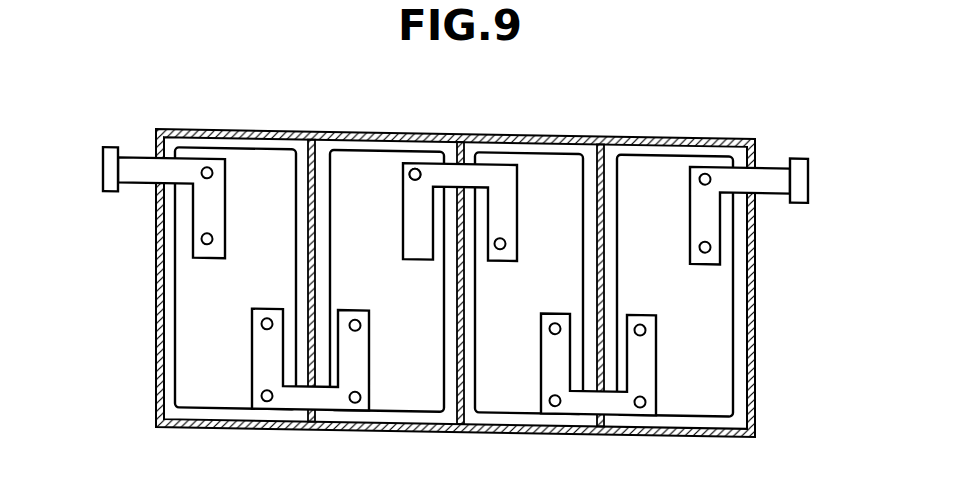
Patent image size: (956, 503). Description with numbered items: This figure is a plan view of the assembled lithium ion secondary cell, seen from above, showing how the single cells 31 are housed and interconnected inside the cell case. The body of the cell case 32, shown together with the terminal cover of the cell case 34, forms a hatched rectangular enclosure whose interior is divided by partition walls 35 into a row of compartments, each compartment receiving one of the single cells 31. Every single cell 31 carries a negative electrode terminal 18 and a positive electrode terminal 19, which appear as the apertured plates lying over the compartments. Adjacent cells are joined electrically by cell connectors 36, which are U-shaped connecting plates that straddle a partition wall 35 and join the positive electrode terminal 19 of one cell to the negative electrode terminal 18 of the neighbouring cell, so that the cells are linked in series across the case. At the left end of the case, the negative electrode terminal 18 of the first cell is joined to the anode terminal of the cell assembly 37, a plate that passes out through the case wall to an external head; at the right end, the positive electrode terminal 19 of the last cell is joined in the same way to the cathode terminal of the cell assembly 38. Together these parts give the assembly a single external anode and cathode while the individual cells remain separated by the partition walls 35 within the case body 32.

The negative electrode terminal 18 is at (207, 167).
The positive electrode terminal 19 is at (416, 169).
The single cell 31 is at (209, 393).
The body of the cell case 32 is at (399, 283).
The terminal cover of the cell case 34 is at (157, 345).
The partition wall 35 is at (310, 152).
The cell connector 36 is at (470, 170).
The anode terminal of the cell assembly 37 is at (143, 172).
The cathode terminal of the cell assembly 38 is at (778, 188).